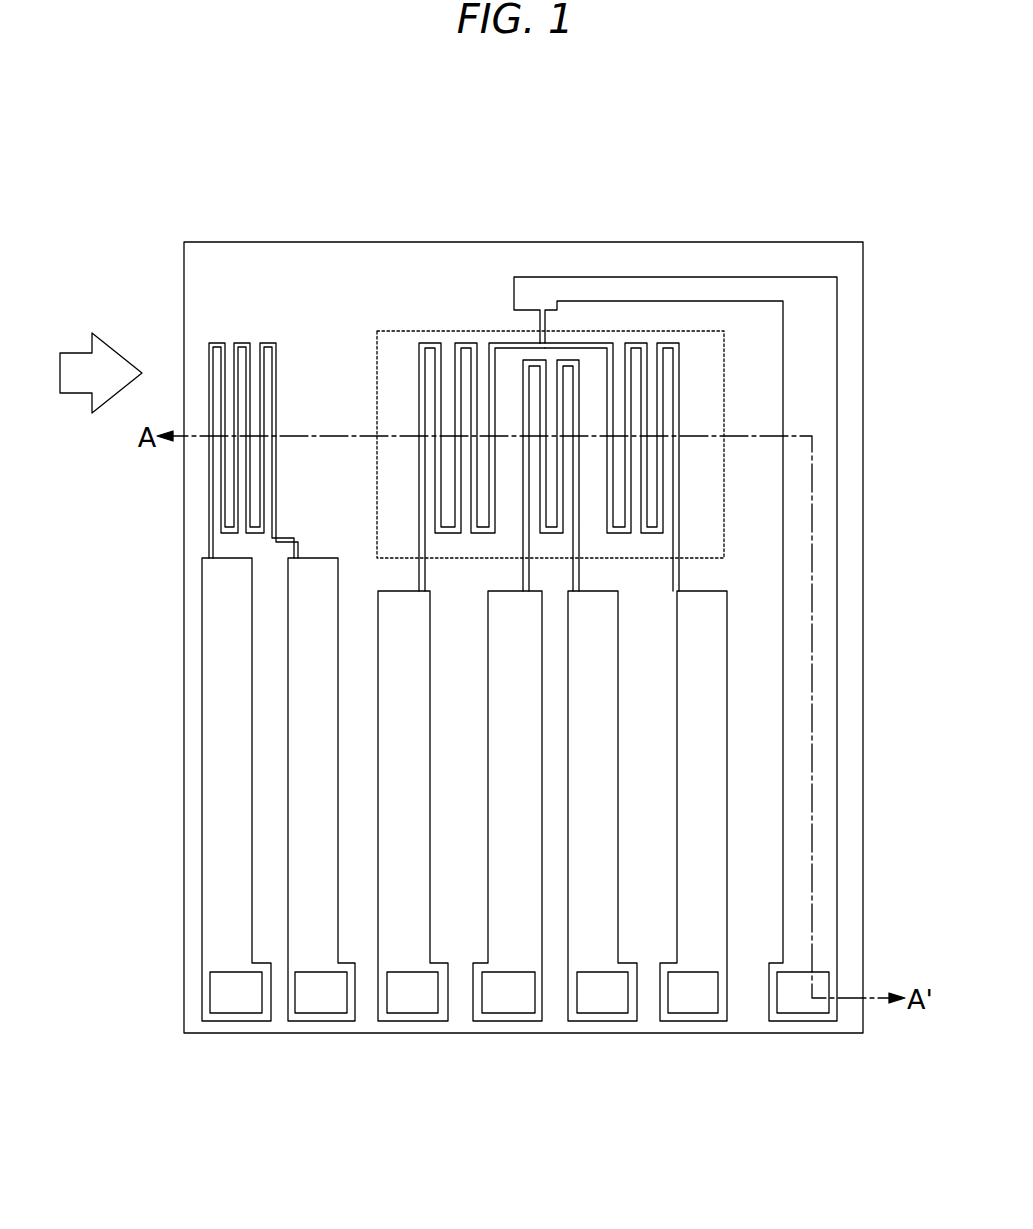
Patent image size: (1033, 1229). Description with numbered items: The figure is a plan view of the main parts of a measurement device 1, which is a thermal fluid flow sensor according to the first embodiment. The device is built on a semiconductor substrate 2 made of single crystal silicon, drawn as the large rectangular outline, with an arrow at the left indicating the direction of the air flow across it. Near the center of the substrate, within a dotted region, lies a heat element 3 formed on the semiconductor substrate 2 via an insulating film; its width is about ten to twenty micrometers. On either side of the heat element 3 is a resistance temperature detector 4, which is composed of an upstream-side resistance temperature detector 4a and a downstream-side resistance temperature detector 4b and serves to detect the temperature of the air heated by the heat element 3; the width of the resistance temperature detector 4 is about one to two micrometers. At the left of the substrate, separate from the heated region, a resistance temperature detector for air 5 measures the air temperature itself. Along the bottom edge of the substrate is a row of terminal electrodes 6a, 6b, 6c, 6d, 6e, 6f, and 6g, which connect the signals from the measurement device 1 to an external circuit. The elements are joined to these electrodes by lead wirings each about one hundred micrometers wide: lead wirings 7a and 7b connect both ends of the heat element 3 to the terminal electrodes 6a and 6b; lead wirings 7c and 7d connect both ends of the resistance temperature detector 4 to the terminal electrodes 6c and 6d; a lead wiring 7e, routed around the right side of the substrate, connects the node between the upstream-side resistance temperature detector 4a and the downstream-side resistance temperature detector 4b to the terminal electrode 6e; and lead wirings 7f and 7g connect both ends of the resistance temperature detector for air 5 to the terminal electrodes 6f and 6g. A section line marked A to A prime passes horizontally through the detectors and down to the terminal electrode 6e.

The measurement device 1 is at (726, 198).
The semiconductor substrate 2 is at (184, 801).
The heat element 3 is at (581, 515).
The resistance temperature detector 4 is at (468, 194).
The upstream-side resistance temperature detector 4a is at (464, 343).
The downstream-side resistance temperature detector 4b is at (634, 343).
The resistance temperature detector for air 5 is at (269, 343).
The terminal electrode 6a is at (508, 1014).
The terminal electrode 6b is at (601, 1014).
The terminal electrode 6c is at (415, 1014).
The terminal electrode 6d is at (694, 1014).
The terminal electrode 6e is at (803, 1014).
The terminal electrode 6f is at (234, 1014).
The terminal electrode 6g is at (322, 1014).
The lead wiring 7a is at (495, 797).
The lead wiring 7b is at (614, 858).
The lead wiring 7c is at (425, 858).
The lead wiring 7d is at (682, 797).
The lead wiring 7e is at (789, 797).
The lead wiring 7f is at (239, 886).
The lead wiring 7g is at (331, 886).